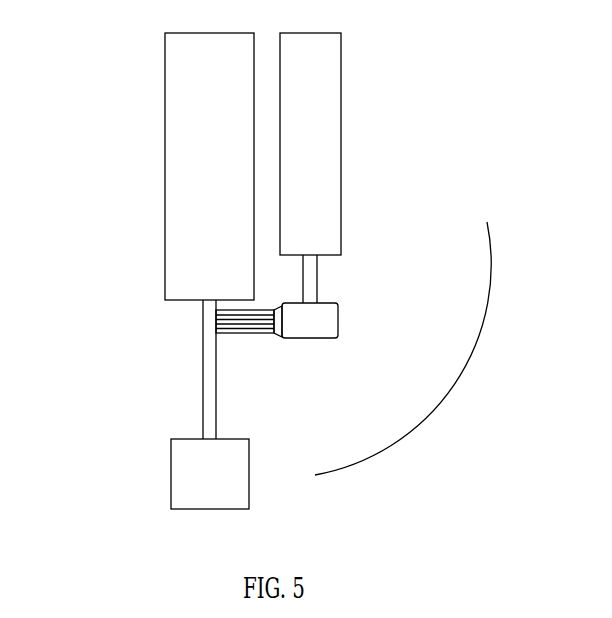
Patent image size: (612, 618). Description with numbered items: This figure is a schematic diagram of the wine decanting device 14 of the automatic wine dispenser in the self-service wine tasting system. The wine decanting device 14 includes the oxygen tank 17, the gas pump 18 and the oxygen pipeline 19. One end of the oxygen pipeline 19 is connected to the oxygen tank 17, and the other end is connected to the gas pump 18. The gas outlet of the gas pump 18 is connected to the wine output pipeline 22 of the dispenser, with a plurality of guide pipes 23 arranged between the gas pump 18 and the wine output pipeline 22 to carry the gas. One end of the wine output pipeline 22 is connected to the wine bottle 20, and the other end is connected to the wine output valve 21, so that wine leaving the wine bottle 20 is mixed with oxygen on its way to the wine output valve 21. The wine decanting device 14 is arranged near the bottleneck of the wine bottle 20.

The wine decanting device 14 is at (414, 348).
The oxygen tank 17 is at (323, 212).
The gas pump 18 is at (303, 330).
The oxygen pipeline 19 is at (317, 277).
The wine bottle 20 is at (172, 177).
The wine output valve 21 is at (180, 475).
The wine output pipeline 22 is at (203, 385).
The guide pipe 23 is at (228, 332).